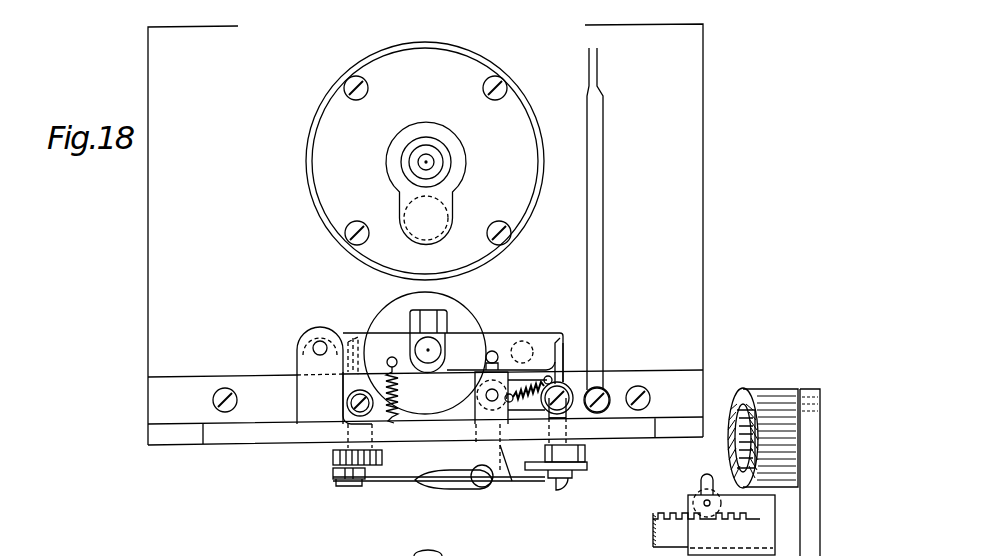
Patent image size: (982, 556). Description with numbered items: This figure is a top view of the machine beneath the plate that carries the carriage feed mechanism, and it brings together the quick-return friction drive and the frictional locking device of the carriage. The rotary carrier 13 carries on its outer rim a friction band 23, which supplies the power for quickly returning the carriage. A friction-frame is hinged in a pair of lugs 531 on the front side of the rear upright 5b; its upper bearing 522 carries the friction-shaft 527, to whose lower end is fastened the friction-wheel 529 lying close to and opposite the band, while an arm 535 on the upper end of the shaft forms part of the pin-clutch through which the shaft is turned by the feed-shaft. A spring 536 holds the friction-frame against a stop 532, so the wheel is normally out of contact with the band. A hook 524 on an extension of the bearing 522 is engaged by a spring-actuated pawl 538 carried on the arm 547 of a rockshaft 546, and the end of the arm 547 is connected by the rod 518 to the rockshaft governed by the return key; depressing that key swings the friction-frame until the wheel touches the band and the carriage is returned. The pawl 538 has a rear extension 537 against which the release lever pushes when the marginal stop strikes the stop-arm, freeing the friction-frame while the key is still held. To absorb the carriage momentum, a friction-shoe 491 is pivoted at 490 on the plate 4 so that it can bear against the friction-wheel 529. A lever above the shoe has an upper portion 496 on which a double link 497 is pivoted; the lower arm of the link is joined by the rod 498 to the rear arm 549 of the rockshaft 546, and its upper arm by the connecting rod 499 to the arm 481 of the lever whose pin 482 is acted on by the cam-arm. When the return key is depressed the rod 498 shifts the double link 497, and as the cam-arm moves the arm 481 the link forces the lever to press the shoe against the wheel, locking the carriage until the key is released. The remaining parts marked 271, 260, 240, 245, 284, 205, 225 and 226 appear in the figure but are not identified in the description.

The plate 4 is at (156, 310).
The rear upright 5b is at (183, 447).
The rotary carrier 13 is at (475, 66).
The friction band 23 is at (534, 112).
The rod 518 is at (603, 252).
The lugs 531 is at (306, 371).
The friction-shoe 491 is at (352, 373).
The upper bearing 522 is at (359, 336).
The pivot 490 is at (347, 405).
The spring 536 is at (398, 402).
The friction-wheel 529 is at (469, 311).
The arm 535 is at (412, 321).
The friction-shaft 527 is at (441, 347).
The hook 524 is at (554, 339).
The spring-actuated pawl 538 is at (561, 369).
The stop 532 is at (488, 372).
The rockshaft 546 is at (477, 395).
The arm 547 is at (533, 408).
The rear extension 537 is at (557, 438).
The upper portion of lever 496 is at (333, 460).
The double link 497 is at (334, 474).
The rod 498 is at (452, 487).
The rear arm 549 is at (476, 454).
The connecting rod 499 is at (513, 482).
The pin 482 is at (587, 457).
The upper portion of lever 481 is at (588, 468).
The knurled ring 271 is at (748, 392).
The knob 260 is at (728, 454).
The plate 240 is at (812, 392).
The pinion 245 is at (690, 508).
The rack 284 is at (656, 533).
The part 205 is at (443, 548).
The part 225 is at (505, 554).
The part 226 is at (618, 554).